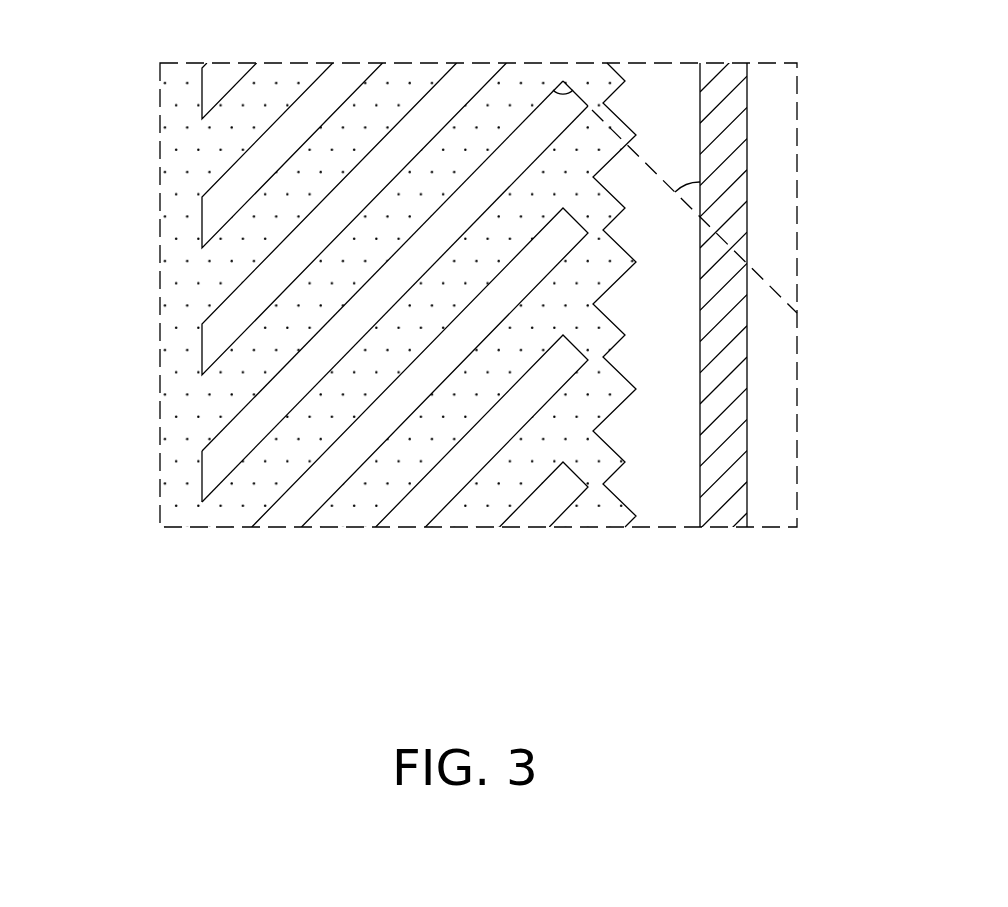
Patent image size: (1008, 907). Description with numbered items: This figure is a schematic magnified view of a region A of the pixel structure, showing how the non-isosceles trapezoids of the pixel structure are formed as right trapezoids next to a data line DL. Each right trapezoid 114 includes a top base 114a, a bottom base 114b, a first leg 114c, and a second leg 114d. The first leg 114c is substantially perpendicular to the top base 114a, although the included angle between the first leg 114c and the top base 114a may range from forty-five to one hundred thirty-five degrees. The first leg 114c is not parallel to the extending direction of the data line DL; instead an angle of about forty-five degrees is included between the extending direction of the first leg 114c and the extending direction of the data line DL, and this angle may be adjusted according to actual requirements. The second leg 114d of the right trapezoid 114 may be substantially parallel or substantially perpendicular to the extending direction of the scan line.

The right trapezoid 114 is at (345, 315).
The top base 114a is at (238, 413).
The bottom base 114b is at (280, 425).
The first leg 114c is at (578, 93).
The second leg 114d is at (202, 477).
The data line DL is at (723, 530).
The region A is at (800, 272).